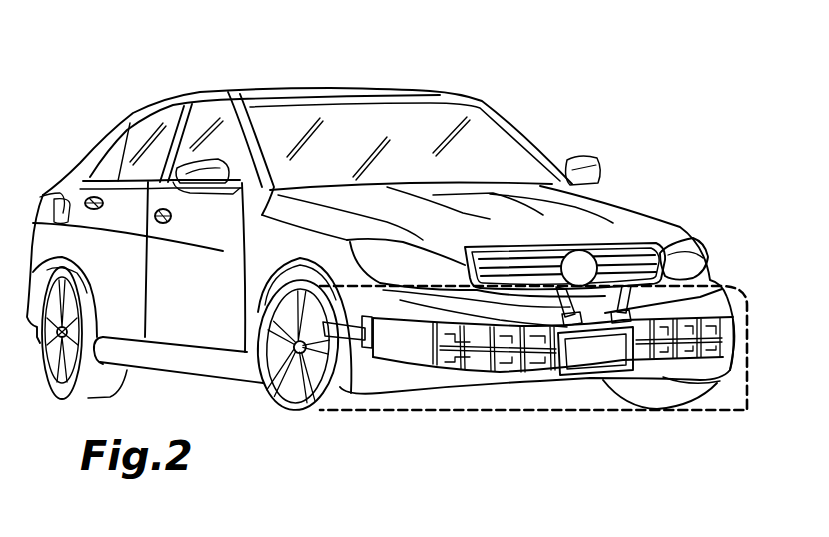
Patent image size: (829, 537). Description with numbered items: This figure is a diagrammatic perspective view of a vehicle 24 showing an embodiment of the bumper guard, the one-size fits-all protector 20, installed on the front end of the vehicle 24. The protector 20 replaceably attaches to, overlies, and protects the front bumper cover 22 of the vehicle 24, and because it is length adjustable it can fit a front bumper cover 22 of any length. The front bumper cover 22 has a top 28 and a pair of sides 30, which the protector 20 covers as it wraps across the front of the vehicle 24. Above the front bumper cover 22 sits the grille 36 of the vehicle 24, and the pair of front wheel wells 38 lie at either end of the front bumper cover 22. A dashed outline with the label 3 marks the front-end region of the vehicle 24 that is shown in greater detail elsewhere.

The region shown in FIG. 3 is at (524, 412).
The one-size fits-all protector 20 is at (674, 419).
The front bumper cover 22 is at (368, 367).
The vehicle 24 is at (160, 97).
The top of front bumper cover 28 is at (723, 281).
The pair of sides of front bumper cover 30 is at (379, 307).
The grille 36 is at (627, 244).
The pair of front wheel wells 38 is at (282, 276).